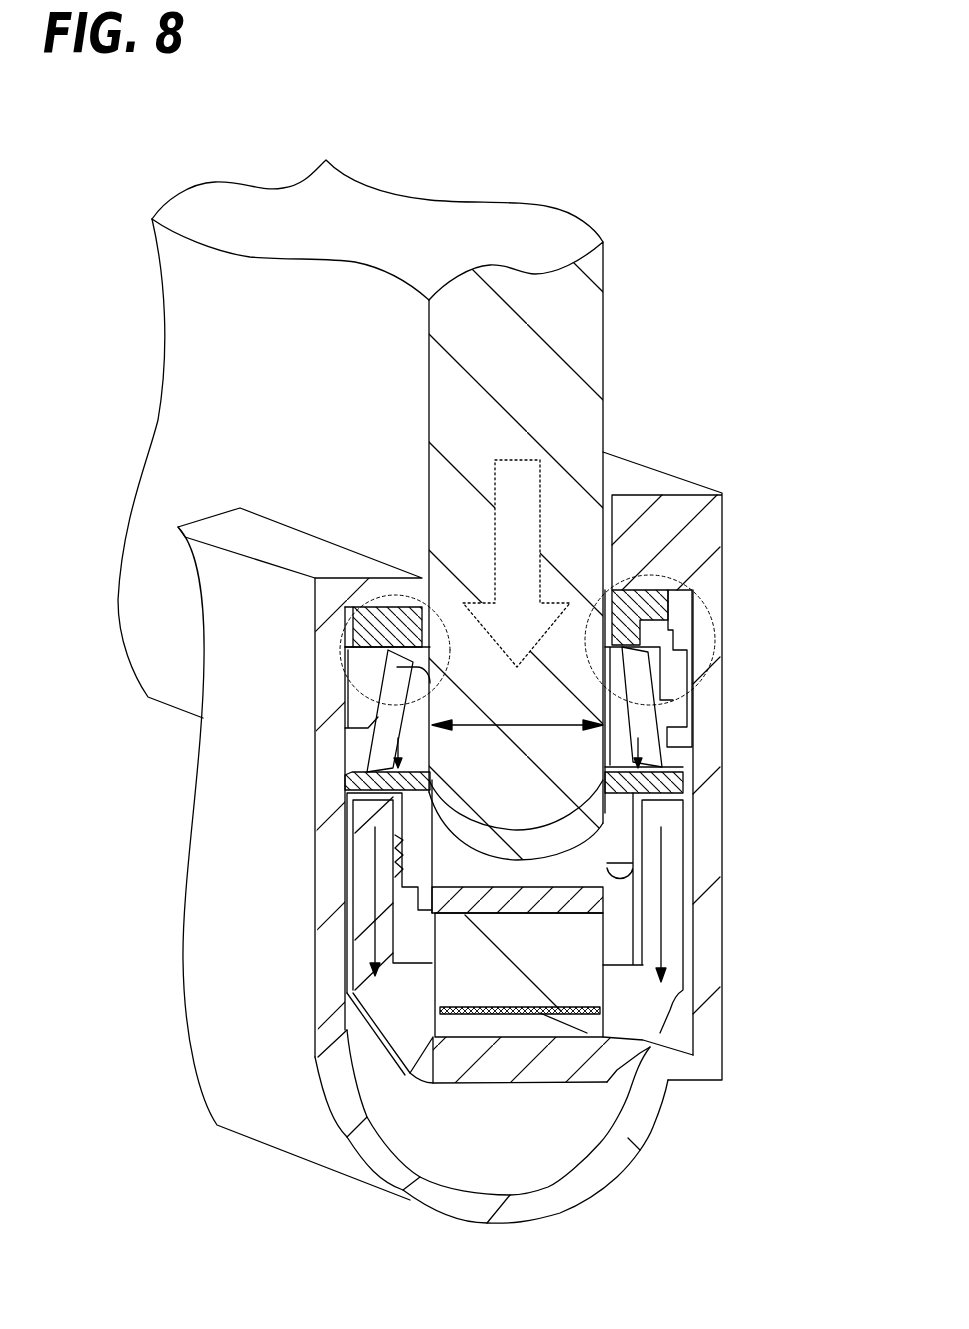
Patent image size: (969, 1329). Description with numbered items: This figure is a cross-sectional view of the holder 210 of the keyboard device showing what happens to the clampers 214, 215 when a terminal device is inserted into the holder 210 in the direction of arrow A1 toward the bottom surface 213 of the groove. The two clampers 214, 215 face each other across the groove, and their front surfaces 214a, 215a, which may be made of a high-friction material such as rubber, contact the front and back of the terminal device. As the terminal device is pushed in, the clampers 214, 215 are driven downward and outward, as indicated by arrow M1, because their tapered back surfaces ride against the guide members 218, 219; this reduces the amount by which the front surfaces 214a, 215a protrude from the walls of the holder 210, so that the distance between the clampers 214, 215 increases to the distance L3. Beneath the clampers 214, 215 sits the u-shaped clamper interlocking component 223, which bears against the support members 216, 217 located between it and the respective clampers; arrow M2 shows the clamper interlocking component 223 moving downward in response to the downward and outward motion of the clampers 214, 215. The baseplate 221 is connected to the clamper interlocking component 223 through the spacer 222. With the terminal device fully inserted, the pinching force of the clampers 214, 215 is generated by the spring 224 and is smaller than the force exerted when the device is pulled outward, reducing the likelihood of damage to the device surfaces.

The holder 210 is at (722, 522).
The bottom surface 213 is at (583, 855).
The clamper 214 is at (673, 710).
The front surface 214a is at (657, 727).
The clamper 215 is at (347, 698).
The front surface 215a is at (377, 717).
The support member 216 is at (677, 780).
The support member 217 is at (362, 781).
The guide member 218 is at (677, 668).
The guide member 219 is at (347, 657).
The baseplate 221 is at (585, 903).
The spacer 222 is at (455, 975).
The clamper interlocking component 223 is at (410, 1025).
The spring 224 is at (373, 830).
The arrow A1 is at (543, 533).
The arrow M1 is at (330, 575).
The arrow M2 is at (667, 873).
The distance L3 is at (482, 725).